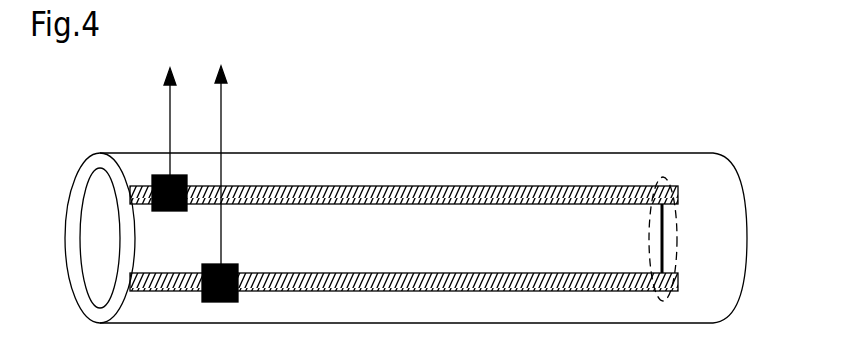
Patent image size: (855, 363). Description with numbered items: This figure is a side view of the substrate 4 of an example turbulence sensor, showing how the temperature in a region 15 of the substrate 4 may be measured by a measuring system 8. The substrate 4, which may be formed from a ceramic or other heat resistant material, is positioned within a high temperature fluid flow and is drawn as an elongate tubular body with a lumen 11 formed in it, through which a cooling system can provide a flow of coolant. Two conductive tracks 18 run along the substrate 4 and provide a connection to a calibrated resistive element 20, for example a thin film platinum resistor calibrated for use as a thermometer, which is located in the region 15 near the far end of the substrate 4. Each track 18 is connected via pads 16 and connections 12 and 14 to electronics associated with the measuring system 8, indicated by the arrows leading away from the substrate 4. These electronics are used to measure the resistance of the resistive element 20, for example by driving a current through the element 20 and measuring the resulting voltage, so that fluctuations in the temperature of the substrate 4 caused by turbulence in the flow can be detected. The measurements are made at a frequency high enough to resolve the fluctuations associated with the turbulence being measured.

The substrate 4 is at (524, 160).
The measuring system 8 is at (195, 69).
The lumen 11 is at (92, 219).
The connection 12 is at (168, 131).
The connection 14 is at (222, 123).
The region of the substrate 15 is at (678, 238).
The pads 16 is at (172, 213).
The conductive tracks 18 is at (378, 188).
The calibrated resistive element 20 is at (661, 252).